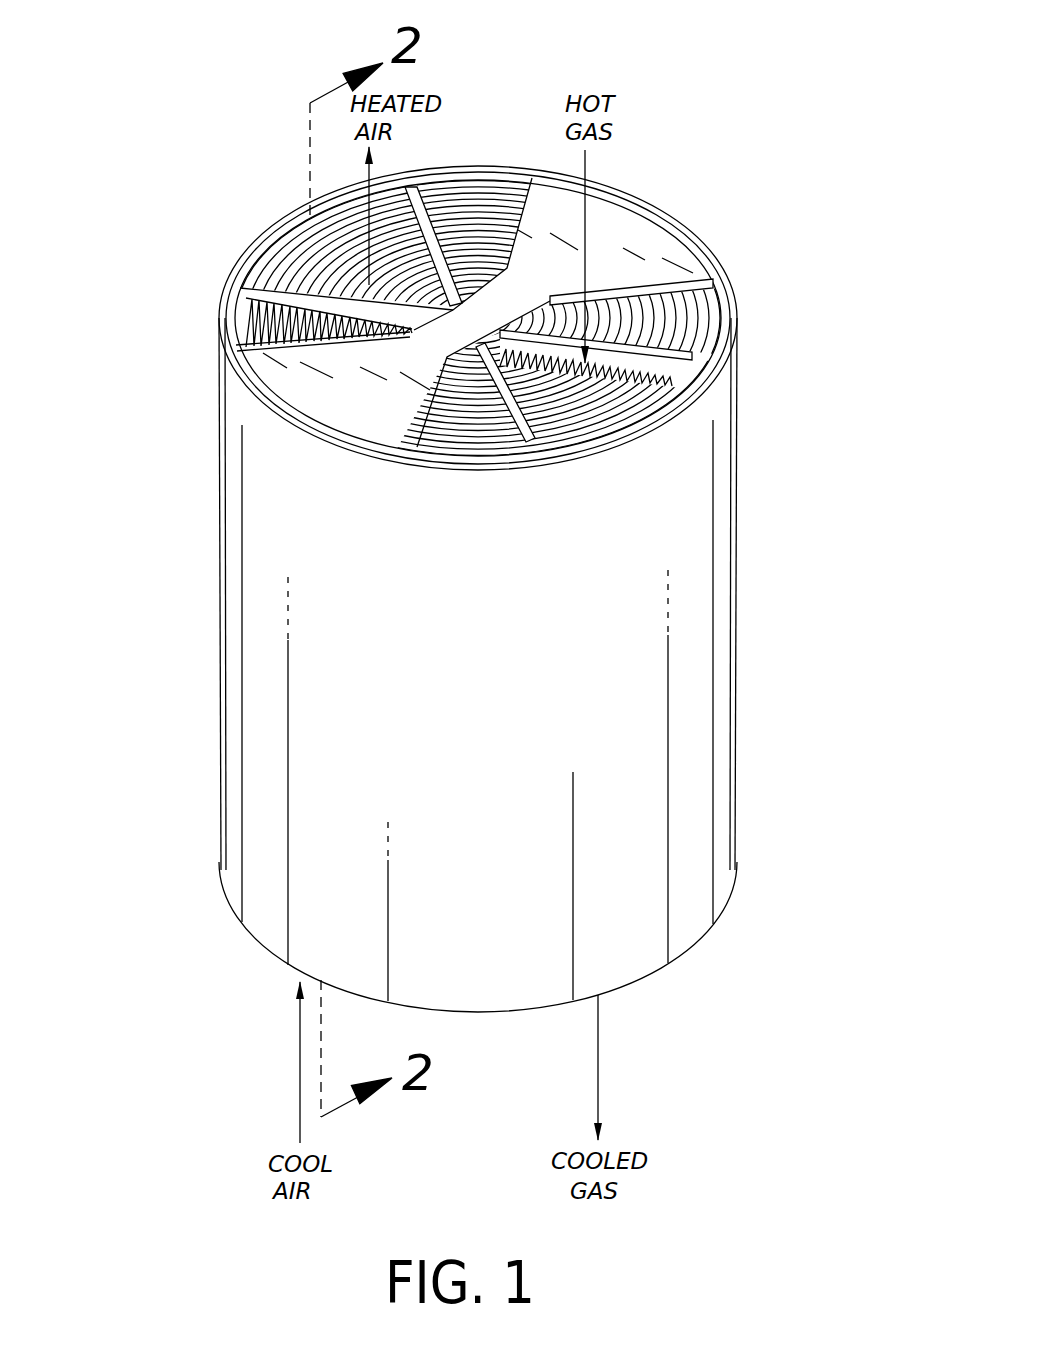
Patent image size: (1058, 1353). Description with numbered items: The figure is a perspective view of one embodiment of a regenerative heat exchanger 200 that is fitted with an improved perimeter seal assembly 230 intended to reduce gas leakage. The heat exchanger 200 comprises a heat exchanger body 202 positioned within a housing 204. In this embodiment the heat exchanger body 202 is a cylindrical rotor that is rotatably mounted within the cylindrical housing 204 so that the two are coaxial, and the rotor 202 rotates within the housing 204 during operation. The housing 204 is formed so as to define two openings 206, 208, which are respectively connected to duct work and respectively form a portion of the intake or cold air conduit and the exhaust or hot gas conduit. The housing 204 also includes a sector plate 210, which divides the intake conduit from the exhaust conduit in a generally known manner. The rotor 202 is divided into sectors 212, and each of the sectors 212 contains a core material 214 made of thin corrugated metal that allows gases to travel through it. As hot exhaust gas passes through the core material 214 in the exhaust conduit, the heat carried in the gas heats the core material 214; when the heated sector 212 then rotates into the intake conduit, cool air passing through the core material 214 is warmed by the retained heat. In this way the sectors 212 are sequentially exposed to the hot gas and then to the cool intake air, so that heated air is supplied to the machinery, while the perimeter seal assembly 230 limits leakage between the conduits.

The regenerative heat exchanger 200 is at (437, 258).
The heat exchanger body 202 is at (735, 325).
The housing 204 is at (218, 577).
The opening 206 is at (472, 222).
The opening 208 is at (658, 306).
The sector plate 210 is at (633, 220).
The sector 212 is at (346, 266).
The core material 214 is at (258, 328).
The perimeter seal assembly 230 is at (700, 373).